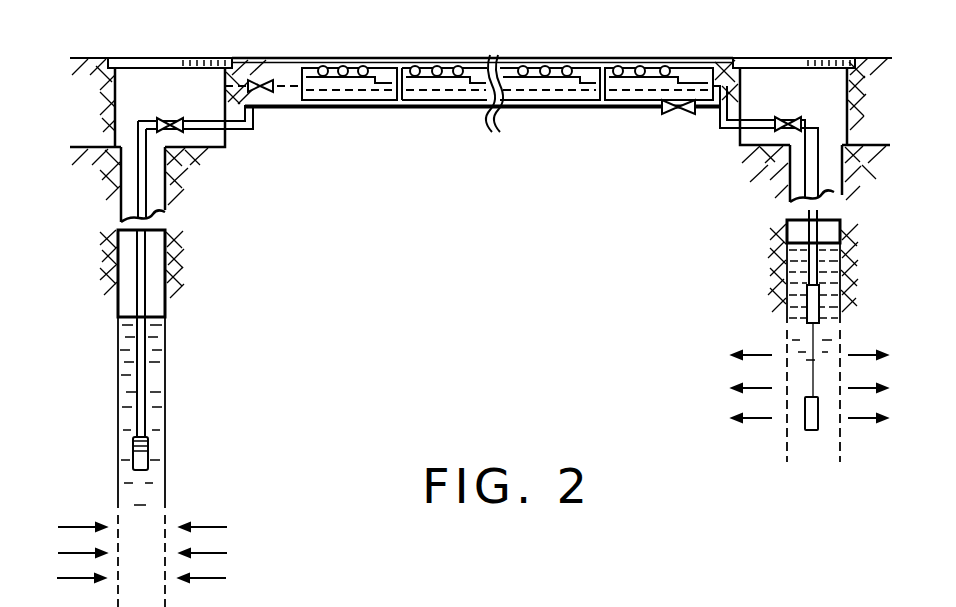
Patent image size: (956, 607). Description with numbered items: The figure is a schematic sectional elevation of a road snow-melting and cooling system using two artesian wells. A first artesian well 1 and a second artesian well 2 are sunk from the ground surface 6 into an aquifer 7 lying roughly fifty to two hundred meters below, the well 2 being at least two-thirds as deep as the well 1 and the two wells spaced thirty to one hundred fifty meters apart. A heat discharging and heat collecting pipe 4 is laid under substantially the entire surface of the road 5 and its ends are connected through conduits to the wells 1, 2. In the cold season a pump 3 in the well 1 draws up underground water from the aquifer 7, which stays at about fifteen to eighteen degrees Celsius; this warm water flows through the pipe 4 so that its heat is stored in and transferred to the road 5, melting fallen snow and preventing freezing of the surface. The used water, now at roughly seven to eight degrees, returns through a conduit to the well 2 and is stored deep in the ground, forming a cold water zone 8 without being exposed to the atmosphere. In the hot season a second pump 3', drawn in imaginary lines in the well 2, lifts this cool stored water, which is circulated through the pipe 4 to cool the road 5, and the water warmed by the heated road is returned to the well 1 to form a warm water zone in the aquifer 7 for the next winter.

The artesian well 1 is at (166, 298).
The artesian well 2 is at (846, 238).
The pump 3 is at (167, 451).
The pump 3' is at (846, 393).
The heat discharging and heat collecting pipe 4 is at (414, 66).
The road 5 is at (587, 56).
The ground surface 6 is at (896, 117).
The aquifer 7 is at (254, 572).
The cold water zone 8 is at (723, 412).